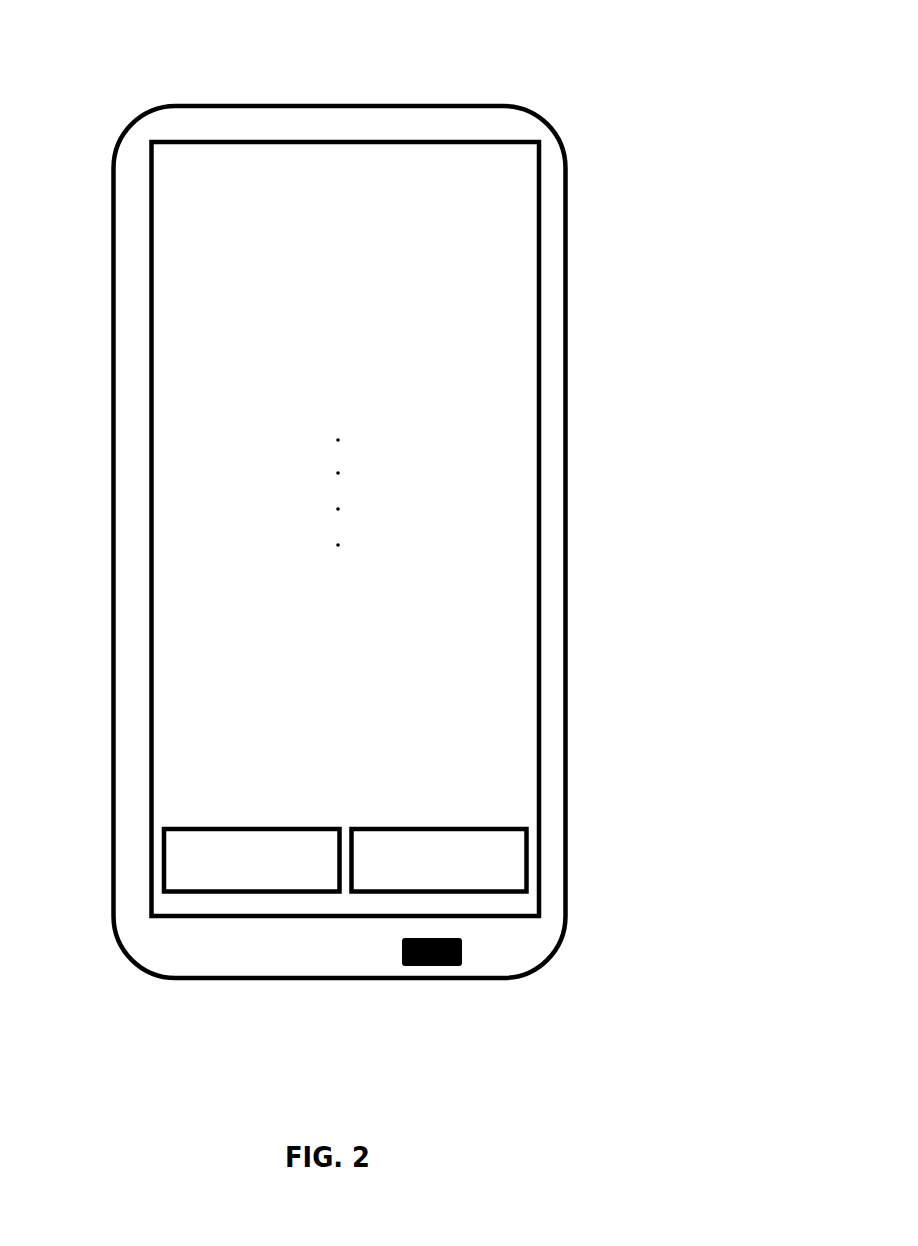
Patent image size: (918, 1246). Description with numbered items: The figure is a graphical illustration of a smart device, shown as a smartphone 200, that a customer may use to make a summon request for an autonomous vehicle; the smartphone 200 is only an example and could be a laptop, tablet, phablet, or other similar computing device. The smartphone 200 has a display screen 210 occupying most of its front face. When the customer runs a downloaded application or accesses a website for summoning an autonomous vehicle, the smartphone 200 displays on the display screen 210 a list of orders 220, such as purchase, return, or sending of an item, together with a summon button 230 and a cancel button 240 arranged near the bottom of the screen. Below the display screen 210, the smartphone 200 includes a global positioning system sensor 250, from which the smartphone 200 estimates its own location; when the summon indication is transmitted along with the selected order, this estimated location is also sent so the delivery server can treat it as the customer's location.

The smartphone 200 is at (460, 61).
The display screen 210 is at (546, 273).
The list of orders 220 is at (419, 274).
The summon button 230 is at (255, 812).
The cancel button 240 is at (420, 812).
The global positioning system (GPS) sensor 250 is at (474, 960).